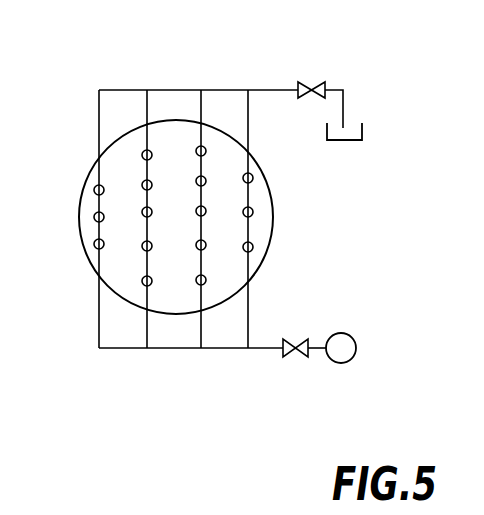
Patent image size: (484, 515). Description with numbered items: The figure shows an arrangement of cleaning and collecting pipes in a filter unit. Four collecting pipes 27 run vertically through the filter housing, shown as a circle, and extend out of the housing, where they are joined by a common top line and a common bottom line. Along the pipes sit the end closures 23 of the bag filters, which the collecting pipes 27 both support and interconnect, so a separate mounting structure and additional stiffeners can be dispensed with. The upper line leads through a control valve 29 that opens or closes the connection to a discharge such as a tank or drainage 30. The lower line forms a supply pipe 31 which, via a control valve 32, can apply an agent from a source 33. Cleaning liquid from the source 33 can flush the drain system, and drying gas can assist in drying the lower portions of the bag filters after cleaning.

The end closures 23 is at (97, 215).
The collecting pipe 27 is at (200, 107).
The control valve 29 is at (307, 82).
The drainage 30 is at (352, 140).
The supply pipe 31 is at (232, 348).
The control valve 32 is at (290, 357).
The source 33 is at (355, 337).